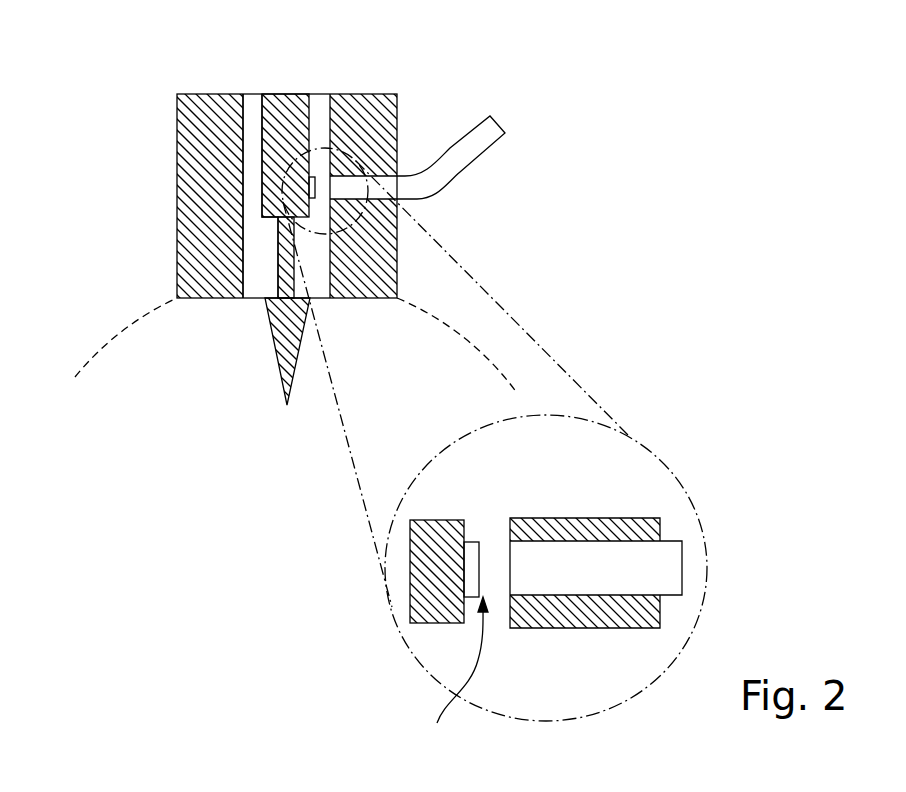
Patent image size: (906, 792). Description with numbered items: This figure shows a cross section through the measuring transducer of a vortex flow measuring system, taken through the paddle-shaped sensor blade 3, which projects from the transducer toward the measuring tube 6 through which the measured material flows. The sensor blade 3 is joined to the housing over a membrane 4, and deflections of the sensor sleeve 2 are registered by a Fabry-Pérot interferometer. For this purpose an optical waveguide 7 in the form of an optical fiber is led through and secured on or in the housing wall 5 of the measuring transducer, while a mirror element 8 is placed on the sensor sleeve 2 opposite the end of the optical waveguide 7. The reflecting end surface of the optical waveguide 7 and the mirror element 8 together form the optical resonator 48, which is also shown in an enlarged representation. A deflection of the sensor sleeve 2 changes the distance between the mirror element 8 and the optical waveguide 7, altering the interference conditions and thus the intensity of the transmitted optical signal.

The sensor sleeve 2 is at (292, 130).
The sensor blade 3 is at (298, 353).
The membrane 4 is at (253, 300).
The housing wall 5 is at (378, 102).
The measuring tube 6 is at (112, 334).
The optical waveguide 7 is at (477, 150).
The mirror element 8 is at (317, 183).
The optical resonator 48 is at (453, 680).